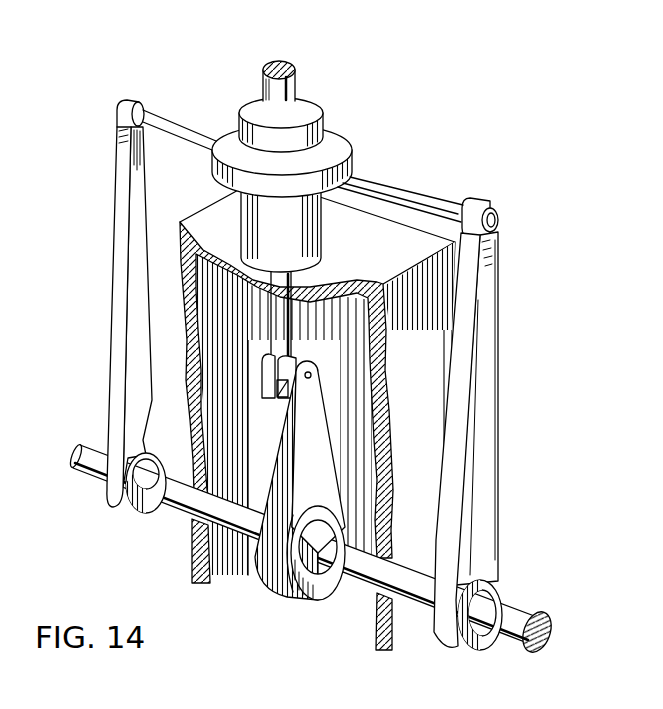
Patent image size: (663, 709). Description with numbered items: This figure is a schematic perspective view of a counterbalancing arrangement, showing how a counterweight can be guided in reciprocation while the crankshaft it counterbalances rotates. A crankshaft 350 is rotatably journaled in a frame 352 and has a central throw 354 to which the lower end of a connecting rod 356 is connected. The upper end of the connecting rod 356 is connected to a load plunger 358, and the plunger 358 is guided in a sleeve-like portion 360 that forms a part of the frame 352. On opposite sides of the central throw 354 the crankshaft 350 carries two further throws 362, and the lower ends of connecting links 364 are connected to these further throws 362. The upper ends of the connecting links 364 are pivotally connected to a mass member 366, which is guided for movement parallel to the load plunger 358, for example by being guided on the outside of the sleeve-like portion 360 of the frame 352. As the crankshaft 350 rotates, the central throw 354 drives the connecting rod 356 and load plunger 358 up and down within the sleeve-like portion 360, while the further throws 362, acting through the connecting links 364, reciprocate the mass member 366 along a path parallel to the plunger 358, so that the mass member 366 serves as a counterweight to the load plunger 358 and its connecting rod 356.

The crankshaft 350 is at (523, 612).
The frame 352 is at (370, 637).
The throw 354 is at (292, 598).
The connecting rod 356 is at (248, 560).
The load plunger 358 is at (296, 81).
The sleeve-like portion 360 is at (323, 120).
The further throws 362 is at (117, 505).
The connecting links 364 is at (128, 310).
The mass member 366 is at (230, 135).